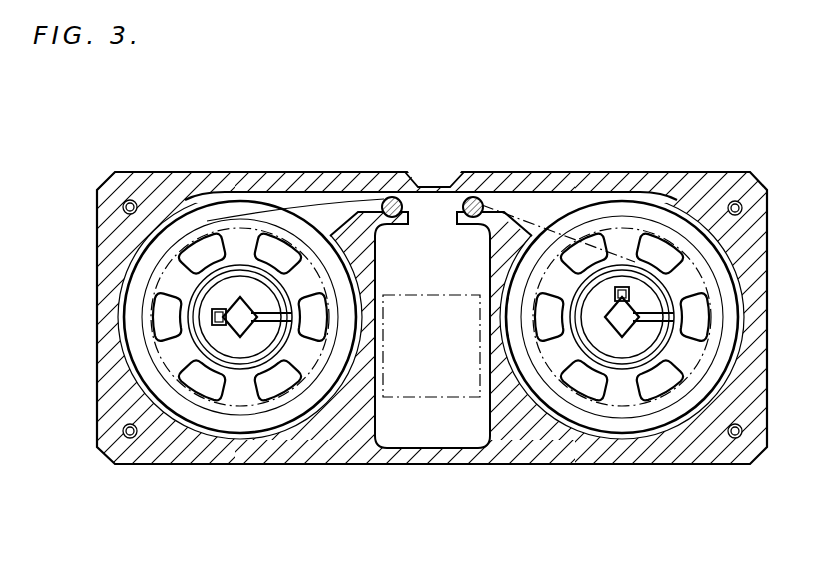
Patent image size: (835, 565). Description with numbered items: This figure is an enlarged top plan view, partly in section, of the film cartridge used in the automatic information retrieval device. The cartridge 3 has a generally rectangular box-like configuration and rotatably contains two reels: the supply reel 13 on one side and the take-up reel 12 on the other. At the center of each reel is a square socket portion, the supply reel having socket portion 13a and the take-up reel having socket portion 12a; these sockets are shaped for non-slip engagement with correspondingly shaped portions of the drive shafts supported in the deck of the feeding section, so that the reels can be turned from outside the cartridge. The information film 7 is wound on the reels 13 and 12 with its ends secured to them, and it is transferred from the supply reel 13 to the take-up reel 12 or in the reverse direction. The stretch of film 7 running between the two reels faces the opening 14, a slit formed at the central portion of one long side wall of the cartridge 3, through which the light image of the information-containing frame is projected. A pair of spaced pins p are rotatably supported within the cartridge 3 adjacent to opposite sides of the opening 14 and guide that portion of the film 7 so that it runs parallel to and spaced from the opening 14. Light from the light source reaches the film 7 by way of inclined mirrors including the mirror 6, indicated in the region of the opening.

The cartridge 3 is at (595, 173).
The mirror 6 is at (418, 295).
The information film 7 is at (520, 215).
The take-up reel 12 is at (647, 422).
The square socket portion 12a is at (617, 326).
The supply reel 13 is at (261, 423).
The square socket portion 13a is at (239, 326).
The opening 14 is at (437, 174).
The pins p is at (388, 197).